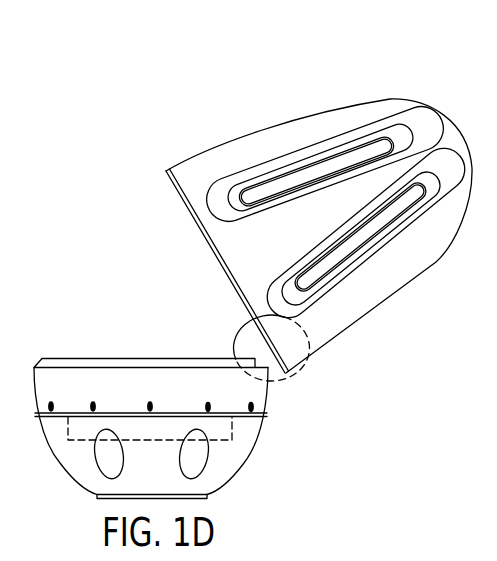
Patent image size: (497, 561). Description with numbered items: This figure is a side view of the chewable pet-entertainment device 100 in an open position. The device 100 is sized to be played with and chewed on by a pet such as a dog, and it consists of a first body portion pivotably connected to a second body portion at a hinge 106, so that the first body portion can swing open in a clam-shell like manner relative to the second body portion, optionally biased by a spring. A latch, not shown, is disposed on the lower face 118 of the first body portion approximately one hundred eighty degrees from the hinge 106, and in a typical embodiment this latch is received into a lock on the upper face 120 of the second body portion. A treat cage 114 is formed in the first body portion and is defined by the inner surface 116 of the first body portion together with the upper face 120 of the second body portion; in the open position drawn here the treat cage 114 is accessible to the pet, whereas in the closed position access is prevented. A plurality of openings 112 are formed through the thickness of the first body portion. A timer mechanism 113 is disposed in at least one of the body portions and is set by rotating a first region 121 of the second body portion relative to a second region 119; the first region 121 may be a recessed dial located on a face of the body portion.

The chewable pet-entertainment device 100 is at (327, 65).
The hinge 106 is at (233, 345).
The openings 112 is at (317, 168).
The timer mechanism 113 is at (233, 425).
The treat cage 114 is at (347, 272).
The inner surface 116 is at (238, 200).
The lower face 118 is at (196, 227).
The second region 119 is at (133, 386).
The upper face 120 is at (115, 358).
The first region 121 is at (58, 458).